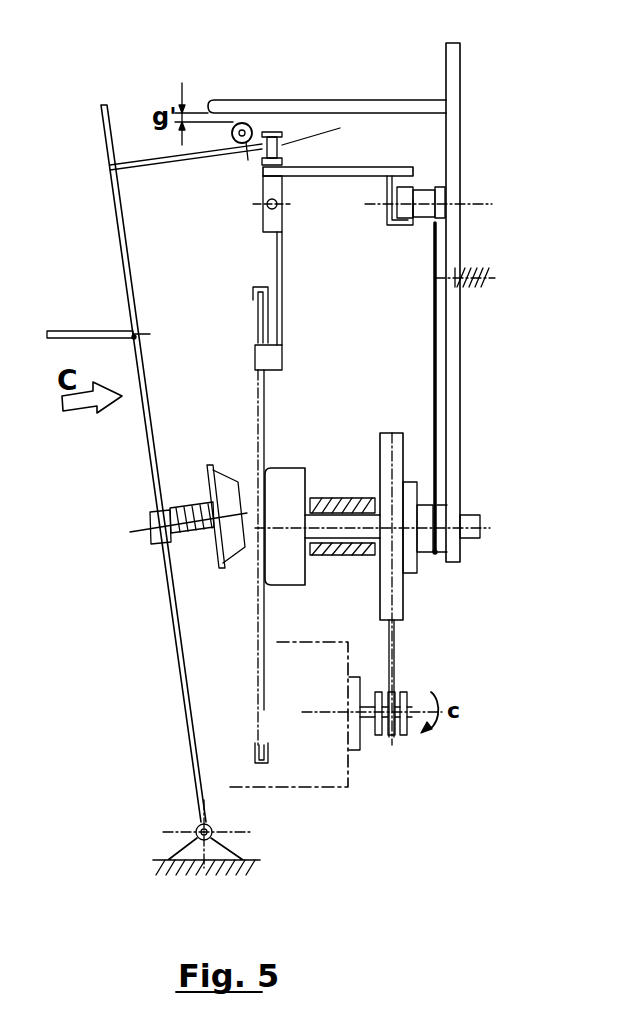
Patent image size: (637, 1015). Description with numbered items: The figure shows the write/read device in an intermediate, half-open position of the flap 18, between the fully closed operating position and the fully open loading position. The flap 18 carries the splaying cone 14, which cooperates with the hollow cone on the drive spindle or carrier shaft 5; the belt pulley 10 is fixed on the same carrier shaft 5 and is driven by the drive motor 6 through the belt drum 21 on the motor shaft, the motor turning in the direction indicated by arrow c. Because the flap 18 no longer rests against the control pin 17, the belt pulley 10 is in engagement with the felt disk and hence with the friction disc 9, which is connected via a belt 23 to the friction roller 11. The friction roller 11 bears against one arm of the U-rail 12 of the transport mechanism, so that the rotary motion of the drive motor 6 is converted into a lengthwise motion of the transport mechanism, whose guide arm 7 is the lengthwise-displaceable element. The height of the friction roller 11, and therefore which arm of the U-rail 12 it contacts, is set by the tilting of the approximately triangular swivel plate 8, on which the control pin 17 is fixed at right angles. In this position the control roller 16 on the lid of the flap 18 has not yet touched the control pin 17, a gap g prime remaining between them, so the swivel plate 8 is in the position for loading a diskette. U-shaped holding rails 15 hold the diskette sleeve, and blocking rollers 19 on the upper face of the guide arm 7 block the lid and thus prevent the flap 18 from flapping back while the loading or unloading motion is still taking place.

The drive spindle or carrier shaft 5 is at (341, 535).
The drive motor 6 is at (317, 775).
The guide arm 7 is at (352, 170).
The swivel plate 8 is at (453, 327).
The friction disc 9 is at (410, 563).
The belt pulley 10 is at (400, 472).
The friction roller 11 is at (403, 212).
The U-rail 12 is at (387, 195).
The splaying cone 14 is at (223, 525).
The holding rails 15 is at (253, 758).
The control roller 16 is at (234, 141).
The control pin 17 is at (252, 107).
The flap 18 is at (153, 478).
The blocking rollers 19 is at (330, 132).
The belt drum 21 is at (397, 720).
The belt 23 is at (432, 355).